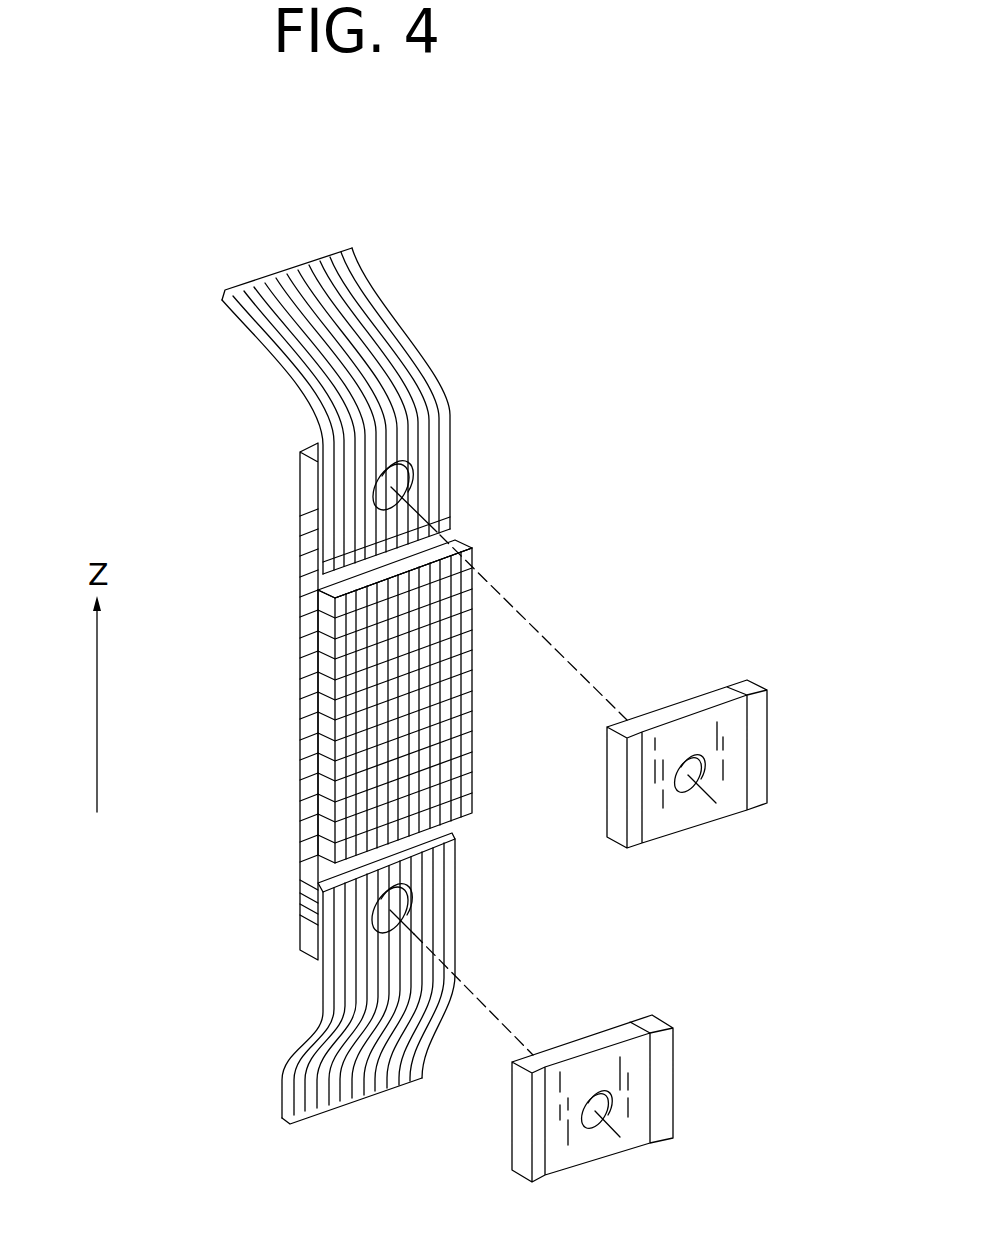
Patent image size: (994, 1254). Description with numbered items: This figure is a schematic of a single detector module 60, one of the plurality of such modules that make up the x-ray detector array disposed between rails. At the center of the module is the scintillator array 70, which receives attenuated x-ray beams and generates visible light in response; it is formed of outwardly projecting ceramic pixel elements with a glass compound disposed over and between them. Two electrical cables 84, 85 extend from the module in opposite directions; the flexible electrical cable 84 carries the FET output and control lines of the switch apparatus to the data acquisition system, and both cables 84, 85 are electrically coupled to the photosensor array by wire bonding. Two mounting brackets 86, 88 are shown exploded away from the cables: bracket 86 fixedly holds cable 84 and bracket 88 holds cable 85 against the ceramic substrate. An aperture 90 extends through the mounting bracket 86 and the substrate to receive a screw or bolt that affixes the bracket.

The detector module 60 is at (592, 357).
The scintillator array 70 is at (473, 707).
The flexible electrical cable 84 is at (441, 362).
The electrical cable 85 is at (302, 1097).
The mounting bracket 86 is at (687, 777).
The mounting bracket 88 is at (673, 1110).
The aperture 90 is at (300, 707).